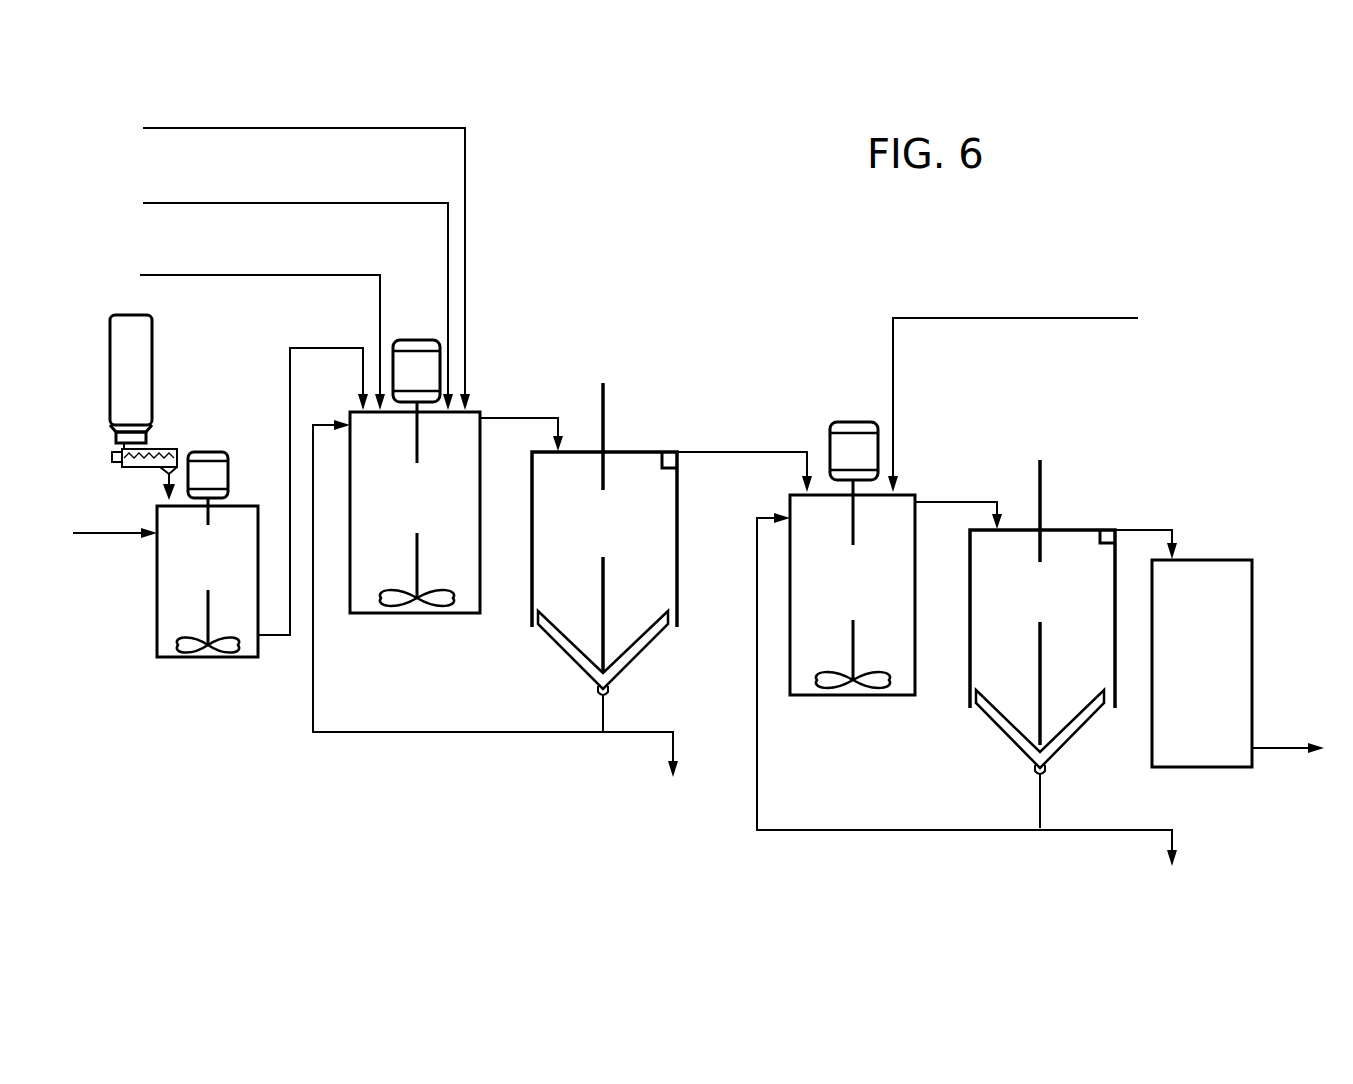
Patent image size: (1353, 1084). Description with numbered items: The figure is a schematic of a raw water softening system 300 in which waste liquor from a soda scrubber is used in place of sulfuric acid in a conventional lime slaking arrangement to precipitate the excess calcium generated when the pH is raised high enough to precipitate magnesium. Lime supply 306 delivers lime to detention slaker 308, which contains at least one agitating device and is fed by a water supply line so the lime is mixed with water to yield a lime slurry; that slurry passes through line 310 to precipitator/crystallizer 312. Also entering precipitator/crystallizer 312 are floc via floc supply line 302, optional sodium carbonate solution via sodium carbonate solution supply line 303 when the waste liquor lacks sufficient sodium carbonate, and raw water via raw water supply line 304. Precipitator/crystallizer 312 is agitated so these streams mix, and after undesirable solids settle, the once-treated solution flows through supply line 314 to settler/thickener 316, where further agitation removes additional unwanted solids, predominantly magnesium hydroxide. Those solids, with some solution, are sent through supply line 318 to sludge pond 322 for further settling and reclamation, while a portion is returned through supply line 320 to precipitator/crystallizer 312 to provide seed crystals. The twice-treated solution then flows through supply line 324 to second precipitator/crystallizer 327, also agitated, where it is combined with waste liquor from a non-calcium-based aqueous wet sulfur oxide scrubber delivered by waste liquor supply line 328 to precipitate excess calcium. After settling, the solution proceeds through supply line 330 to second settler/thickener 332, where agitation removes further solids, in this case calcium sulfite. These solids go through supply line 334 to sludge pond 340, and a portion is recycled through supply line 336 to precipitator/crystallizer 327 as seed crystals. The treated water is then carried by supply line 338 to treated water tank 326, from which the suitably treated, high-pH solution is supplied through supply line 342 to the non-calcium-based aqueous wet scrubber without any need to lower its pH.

The system 300 is at (692, 148).
The floc supply line 302 is at (410, 126).
The sodium carbonate solution supply line 303 is at (357, 274).
The raw water supply line 304 is at (422, 202).
The lime supply 306 is at (153, 400).
The detention slaker 308 is at (152, 592).
The line 310 is at (356, 347).
The precipitator/crystallizer 312 is at (350, 585).
The supply line 314 is at (517, 418).
The settler/thickener 316 is at (677, 578).
The supply line 318 is at (602, 712).
The supply line 320 is at (423, 734).
The sludge pond 322 is at (675, 752).
The supply line 324 is at (752, 450).
The treated water tank 326 is at (1253, 607).
The second precipitator/crystallizer 327 is at (917, 610).
The waste liquor supply line 328 is at (890, 337).
The supply line 330 is at (930, 502).
The second settler/thickener 332 is at (1075, 530).
The supply line 334 is at (1040, 808).
The supply line 336 is at (818, 830).
The supply line 338 is at (1143, 530).
The sludge pond 340 is at (1166, 843).
The supply line 342 is at (1295, 787).